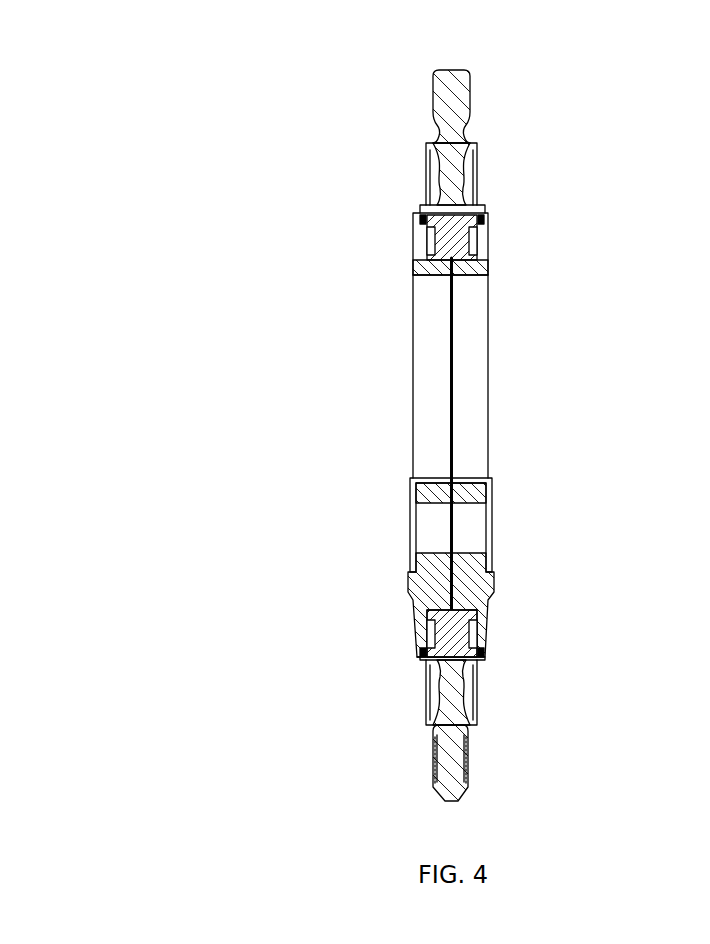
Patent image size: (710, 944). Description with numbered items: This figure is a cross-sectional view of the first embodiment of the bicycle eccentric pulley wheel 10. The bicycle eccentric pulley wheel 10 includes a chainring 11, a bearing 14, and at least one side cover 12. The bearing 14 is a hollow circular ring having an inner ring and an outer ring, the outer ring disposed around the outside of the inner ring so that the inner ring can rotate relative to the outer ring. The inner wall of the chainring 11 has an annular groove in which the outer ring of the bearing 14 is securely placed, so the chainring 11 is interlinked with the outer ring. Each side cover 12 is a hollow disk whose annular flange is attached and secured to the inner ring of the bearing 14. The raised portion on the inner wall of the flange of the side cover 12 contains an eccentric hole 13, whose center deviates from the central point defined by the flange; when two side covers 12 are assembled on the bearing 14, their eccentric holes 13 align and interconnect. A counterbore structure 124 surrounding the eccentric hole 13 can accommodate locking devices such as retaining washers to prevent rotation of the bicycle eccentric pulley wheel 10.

The bicycle eccentric pulley wheel 10 is at (310, 228).
The chainring 11 is at (453, 100).
The side cover 12 is at (472, 347).
The counterbore structure 124 is at (415, 537).
The eccentric hole 13 is at (465, 538).
The bearing 14 is at (457, 240).